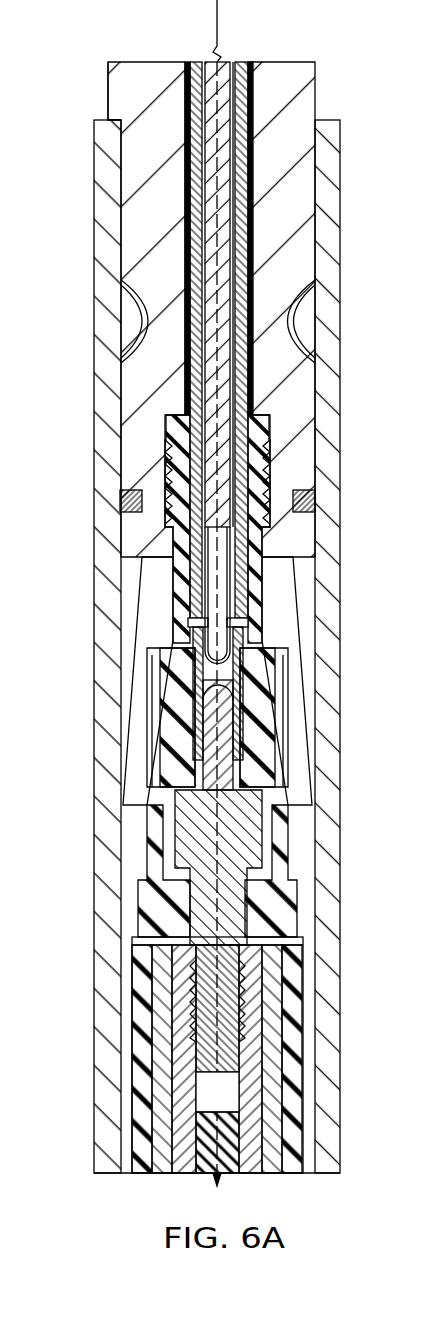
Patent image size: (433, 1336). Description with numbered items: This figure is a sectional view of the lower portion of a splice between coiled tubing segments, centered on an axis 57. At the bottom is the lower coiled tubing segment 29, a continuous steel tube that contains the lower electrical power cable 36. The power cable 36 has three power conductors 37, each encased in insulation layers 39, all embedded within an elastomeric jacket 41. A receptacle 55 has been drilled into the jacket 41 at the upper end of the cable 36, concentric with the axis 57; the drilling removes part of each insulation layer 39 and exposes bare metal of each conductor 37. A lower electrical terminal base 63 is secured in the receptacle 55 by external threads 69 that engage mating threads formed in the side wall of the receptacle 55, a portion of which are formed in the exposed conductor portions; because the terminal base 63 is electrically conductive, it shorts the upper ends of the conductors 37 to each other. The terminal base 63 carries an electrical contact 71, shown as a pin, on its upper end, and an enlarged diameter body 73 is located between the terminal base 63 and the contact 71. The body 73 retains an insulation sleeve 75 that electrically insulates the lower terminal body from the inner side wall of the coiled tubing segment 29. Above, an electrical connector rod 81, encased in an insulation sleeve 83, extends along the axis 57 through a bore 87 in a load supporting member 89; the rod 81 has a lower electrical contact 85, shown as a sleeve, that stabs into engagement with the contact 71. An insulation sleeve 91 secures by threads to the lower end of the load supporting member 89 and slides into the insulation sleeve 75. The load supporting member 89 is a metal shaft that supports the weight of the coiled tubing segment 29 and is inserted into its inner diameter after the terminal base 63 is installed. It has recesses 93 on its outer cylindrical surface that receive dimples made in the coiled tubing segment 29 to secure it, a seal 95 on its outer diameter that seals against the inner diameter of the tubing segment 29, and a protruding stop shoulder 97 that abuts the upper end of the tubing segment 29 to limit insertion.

The axis 57 is at (218, 32).
The stop shoulder 97 is at (109, 82).
The load supporting member 89 is at (128, 143).
The bore 87 is at (186, 200).
The insulation sleeve 83 is at (192, 300).
The recesses 93 is at (133, 330).
The electrical connector rod 81 is at (210, 385).
The seal 95 is at (128, 493).
The insulation sleeve 91 is at (158, 622).
The lower electrical contact 85 is at (185, 740).
The lower coiled tubing segment 29 is at (100, 843).
The insulation sleeve 75 is at (176, 904).
The insulation layers 39 is at (148, 968).
The external threads 69 is at (192, 1035).
The elastomeric jacket 41 is at (162, 1098).
The power conductors 37 is at (182, 1148).
The electrical contact 71 is at (225, 748).
The enlarged diameter body 73 is at (255, 825).
The lower electrical power cable 36 is at (309, 958).
The lower electrical terminal base 63 is at (232, 1055).
The receptacle 55 is at (232, 1090).